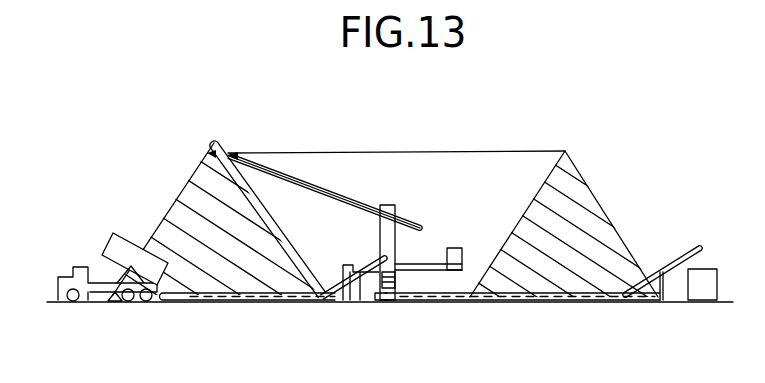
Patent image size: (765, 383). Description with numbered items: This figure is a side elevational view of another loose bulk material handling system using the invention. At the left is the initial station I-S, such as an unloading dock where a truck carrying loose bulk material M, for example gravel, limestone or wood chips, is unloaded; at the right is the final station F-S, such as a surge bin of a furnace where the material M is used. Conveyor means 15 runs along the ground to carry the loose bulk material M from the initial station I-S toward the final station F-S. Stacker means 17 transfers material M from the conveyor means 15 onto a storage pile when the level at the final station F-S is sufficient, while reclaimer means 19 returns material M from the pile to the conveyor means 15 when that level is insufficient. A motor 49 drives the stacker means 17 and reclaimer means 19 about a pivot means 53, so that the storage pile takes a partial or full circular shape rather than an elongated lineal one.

The conveyor means 15 is at (270, 301).
The stacker means 17 is at (285, 178).
The reclaimer means 19 is at (238, 177).
The motor 49 is at (454, 249).
The pivot means 53 is at (392, 301).
The loose bulk material M is at (605, 233).
The initial station I-S is at (123, 318).
The final station F-S is at (710, 318).